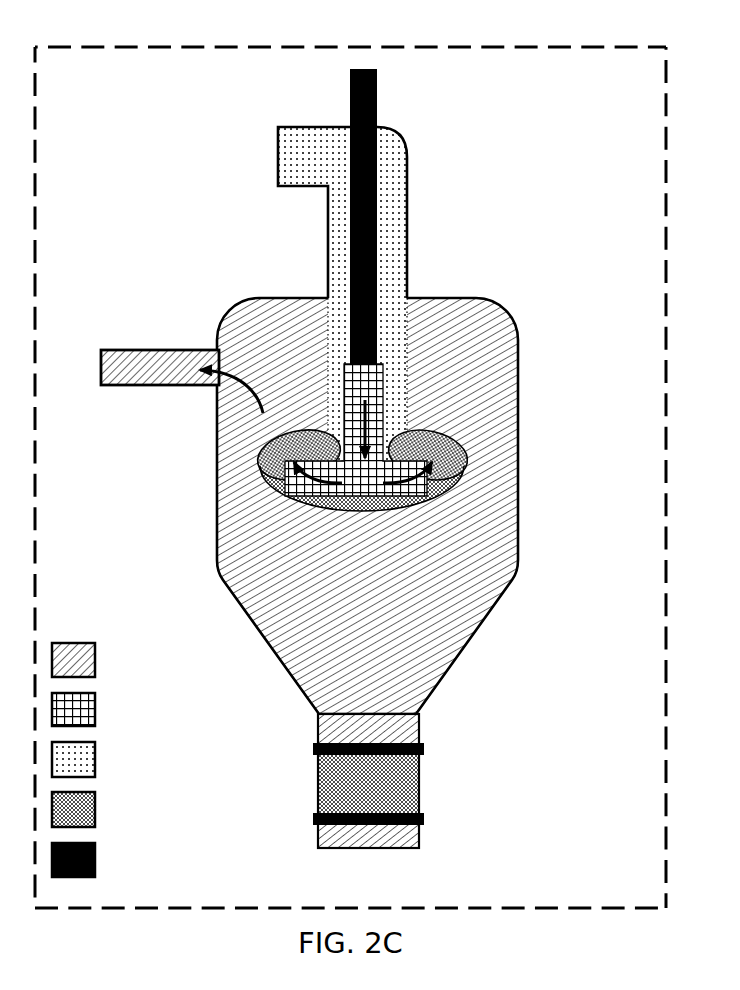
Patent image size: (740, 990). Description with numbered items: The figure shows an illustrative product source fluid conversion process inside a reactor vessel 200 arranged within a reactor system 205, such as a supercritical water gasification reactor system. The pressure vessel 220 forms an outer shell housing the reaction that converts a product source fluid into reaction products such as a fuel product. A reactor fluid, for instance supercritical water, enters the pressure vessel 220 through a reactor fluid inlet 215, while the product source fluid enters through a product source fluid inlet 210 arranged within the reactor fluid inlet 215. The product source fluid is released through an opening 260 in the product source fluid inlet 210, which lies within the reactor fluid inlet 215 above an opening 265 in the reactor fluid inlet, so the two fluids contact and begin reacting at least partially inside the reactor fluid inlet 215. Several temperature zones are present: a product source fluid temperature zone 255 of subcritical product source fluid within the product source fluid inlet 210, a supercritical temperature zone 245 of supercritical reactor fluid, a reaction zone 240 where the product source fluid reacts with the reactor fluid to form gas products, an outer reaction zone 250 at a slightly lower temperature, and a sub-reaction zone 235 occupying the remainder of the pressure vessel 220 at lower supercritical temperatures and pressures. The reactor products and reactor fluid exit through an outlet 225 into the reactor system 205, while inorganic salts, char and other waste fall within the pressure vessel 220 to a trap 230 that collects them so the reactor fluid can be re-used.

The reactor vessel 200 is at (507, 141).
The reactor system 205 is at (455, 44).
The product source fluid inlet 210 is at (381, 118).
The reactor fluid inlet 215 is at (407, 207).
The pressure vessel 220 is at (480, 298).
The outlet 225 is at (132, 348).
The trap 230 is at (418, 800).
The sub-reaction zone 235 is at (95, 660).
The reaction zone 240 is at (95, 710).
The supercritical temperature zone 245 is at (95, 759).
The outer reaction zone 250 is at (95, 809).
The product source fluid temperature zone 255 is at (95, 860).
The opening 260 is at (350, 367).
The opening 265 is at (328, 425).